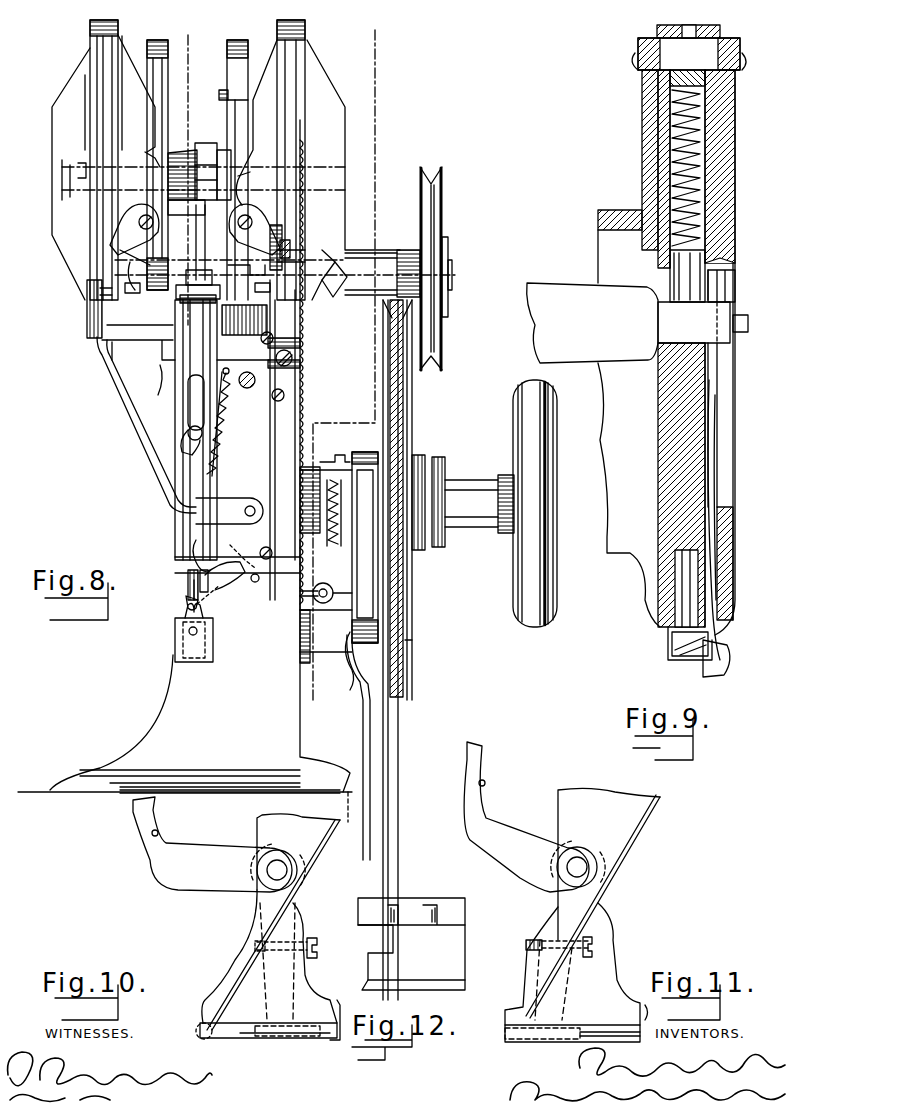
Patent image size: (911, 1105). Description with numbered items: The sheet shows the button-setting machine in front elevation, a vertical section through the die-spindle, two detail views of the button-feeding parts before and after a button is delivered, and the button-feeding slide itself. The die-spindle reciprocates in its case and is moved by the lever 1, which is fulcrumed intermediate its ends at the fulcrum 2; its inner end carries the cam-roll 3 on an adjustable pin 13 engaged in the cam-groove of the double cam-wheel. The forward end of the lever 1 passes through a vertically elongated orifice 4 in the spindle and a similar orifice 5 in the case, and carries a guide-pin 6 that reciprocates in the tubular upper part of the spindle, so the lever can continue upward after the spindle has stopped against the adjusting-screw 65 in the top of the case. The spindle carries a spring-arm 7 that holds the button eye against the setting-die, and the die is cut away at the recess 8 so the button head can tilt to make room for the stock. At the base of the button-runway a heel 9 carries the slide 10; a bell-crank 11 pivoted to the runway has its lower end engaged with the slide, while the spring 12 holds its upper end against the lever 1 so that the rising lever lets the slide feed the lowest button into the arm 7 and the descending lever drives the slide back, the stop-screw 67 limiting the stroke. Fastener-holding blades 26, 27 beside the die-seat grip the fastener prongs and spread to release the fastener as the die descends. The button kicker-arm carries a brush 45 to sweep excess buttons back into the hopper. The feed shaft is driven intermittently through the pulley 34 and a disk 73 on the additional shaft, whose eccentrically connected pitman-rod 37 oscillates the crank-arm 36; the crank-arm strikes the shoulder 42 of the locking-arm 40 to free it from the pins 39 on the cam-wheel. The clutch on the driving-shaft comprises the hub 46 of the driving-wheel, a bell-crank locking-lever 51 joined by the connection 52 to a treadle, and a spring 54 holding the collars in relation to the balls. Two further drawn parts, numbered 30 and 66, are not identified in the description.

In FIG. 8, the lever 1 is at (344, 357).
In FIG. 10, the lever 1 is at (347, 817).
In FIG. 8, the fulcrum 2 is at (186, 596).
In FIG. 8, the cam-roll 3 is at (189, 289).
In FIG. 9, the elongated orifice 4 is at (665, 274).
In FIG. 8, the orifice 5 is at (192, 402).
In FIG. 9, the orifice 5 is at (728, 282).
In FIG. 9, the guide-pin 6 is at (703, 322).
In FIG. 8, the spring-arm 7 is at (218, 588).
In FIG. 9, the spring-arm 7 is at (728, 642).
In FIG. 9, the recess 8 is at (676, 650).
In FIG. 8, the heel 9 is at (237, 565).
In FIG. 10, the heel 9 is at (269, 956).
In FIG. 11, the heel 9 is at (572, 964).
In FIG. 10, the slide 10 is at (312, 1036).
In FIG. 12, the slide 10 is at (411, 944).
In FIG. 11, the slide 10 is at (565, 1040).
In FIG. 8, the bell-crank 11 is at (229, 511).
In FIG. 10, the bell-crank 11 is at (260, 867).
In FIG. 11, the bell-crank 11 is at (567, 864).
In FIG. 8, the spring 12 is at (222, 420).
In FIG. 10, the spring 12 is at (158, 833).
In FIG. 11, the spring 12 is at (486, 783).
In FIG. 8, the pin 13 is at (187, 170).
In FIG. 8, the fastener-holding blade 26 is at (180, 621).
In FIG. 8, the fastener-holding blade 27 is at (218, 602).
In FIG. 8, the hub collar 30 is at (186, 214).
In FIG. 8, the pulley 34 is at (443, 216).
In FIG. 8, the crank-arm 36 is at (289, 251).
In FIG. 8, the pitman-rod 37 is at (190, 152).
In FIG. 8, the pins 39 is at (221, 92).
In FIG. 8, the locking-arm 40 is at (225, 195).
In FIG. 8, the shoulder 42 is at (212, 182).
In FIG. 8, the brush 45 is at (285, 247).
In FIG. 8, the hub 46 is at (335, 482).
In FIG. 8, the bell-crank locking-lever 51 is at (366, 547).
In FIG. 8, the connection 52 is at (363, 730).
In FIG. 8, the spring 54 is at (326, 541).
In FIG. 9, the adjusting-screw 65 is at (722, 32).
In FIG. 9, the spring 66 is at (675, 150).
In FIG. 10, the stop-screw 67 is at (303, 940).
In FIG. 11, the stop-screw 67 is at (600, 942).
In FIG. 8, the disk 73 is at (200, 242).